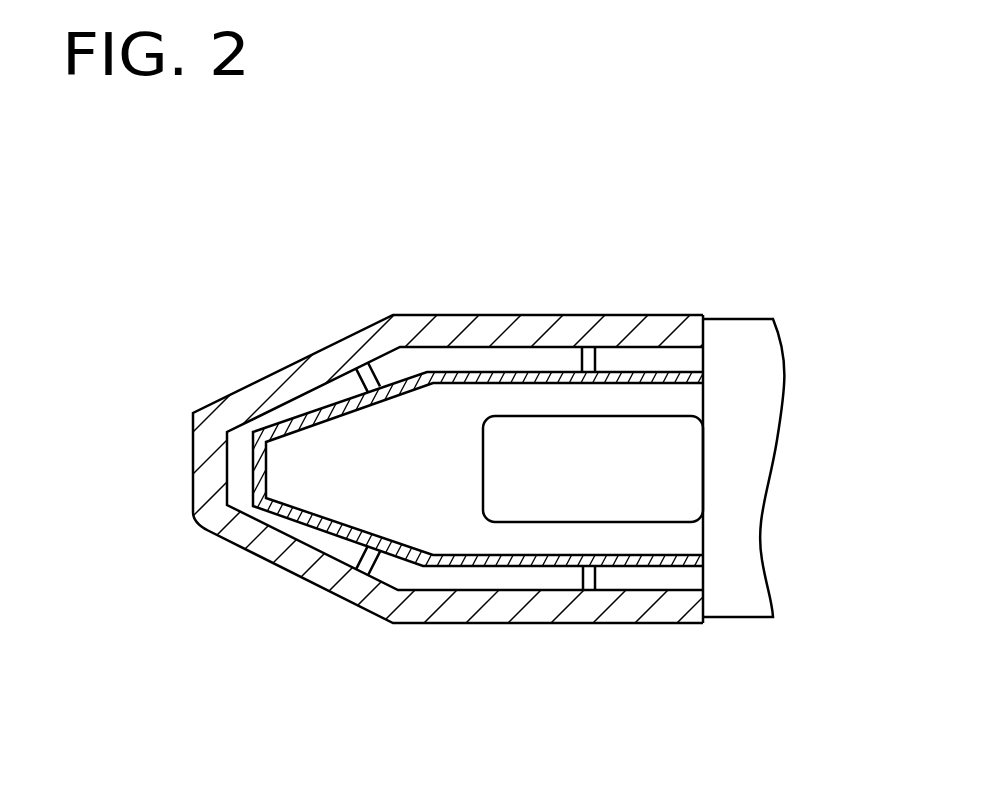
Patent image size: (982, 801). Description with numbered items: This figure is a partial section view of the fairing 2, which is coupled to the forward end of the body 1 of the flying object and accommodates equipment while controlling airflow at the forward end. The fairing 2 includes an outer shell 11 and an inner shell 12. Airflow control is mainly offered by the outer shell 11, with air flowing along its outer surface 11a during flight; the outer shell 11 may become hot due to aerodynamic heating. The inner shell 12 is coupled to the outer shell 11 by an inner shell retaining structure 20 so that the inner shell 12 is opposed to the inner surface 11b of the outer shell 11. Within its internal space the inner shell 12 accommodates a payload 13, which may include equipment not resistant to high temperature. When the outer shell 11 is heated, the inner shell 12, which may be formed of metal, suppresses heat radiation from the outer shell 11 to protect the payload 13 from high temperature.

The body 1 is at (772, 375).
The fairing 2 is at (410, 243).
The outer shell 11 is at (491, 484).
The outer surface 11a is at (257, 557).
The inner surface 11b is at (305, 541).
The inner shell 12 is at (372, 401).
The payload 13 is at (604, 484).
The inner shell retaining structure 20 is at (580, 348).